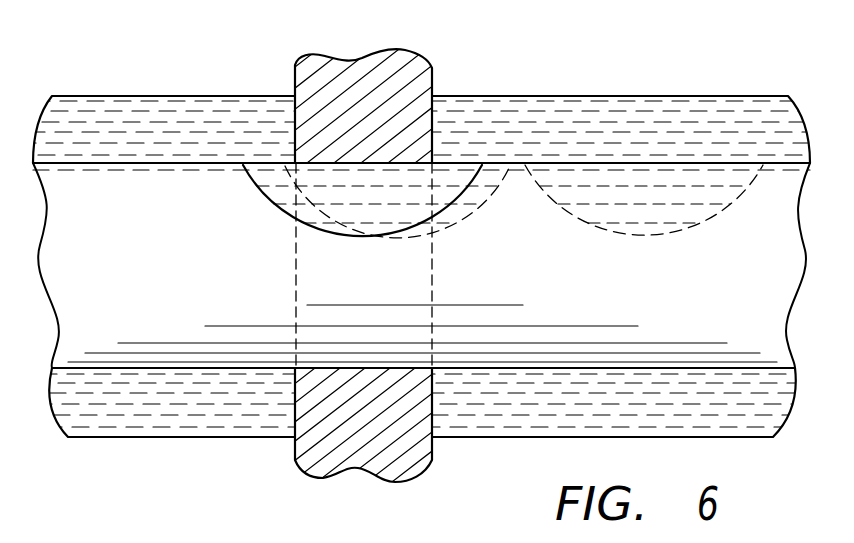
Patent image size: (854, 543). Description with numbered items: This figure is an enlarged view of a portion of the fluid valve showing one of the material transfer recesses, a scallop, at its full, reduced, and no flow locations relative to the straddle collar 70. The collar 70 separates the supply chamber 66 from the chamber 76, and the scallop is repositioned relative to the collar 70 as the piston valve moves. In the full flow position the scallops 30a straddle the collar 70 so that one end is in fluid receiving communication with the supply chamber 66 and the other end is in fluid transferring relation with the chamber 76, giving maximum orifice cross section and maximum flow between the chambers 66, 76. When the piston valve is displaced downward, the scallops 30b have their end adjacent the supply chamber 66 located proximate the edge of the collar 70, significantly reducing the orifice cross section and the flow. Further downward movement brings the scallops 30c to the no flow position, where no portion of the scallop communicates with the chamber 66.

The supply chamber 66 is at (158, 107).
The collar 70 is at (362, 80).
The chamber 76 is at (588, 105).
The scallops in full flow position 30a is at (280, 212).
The scallops in reduced flow position 30b is at (486, 205).
The scallops in no flow position 30c is at (643, 232).